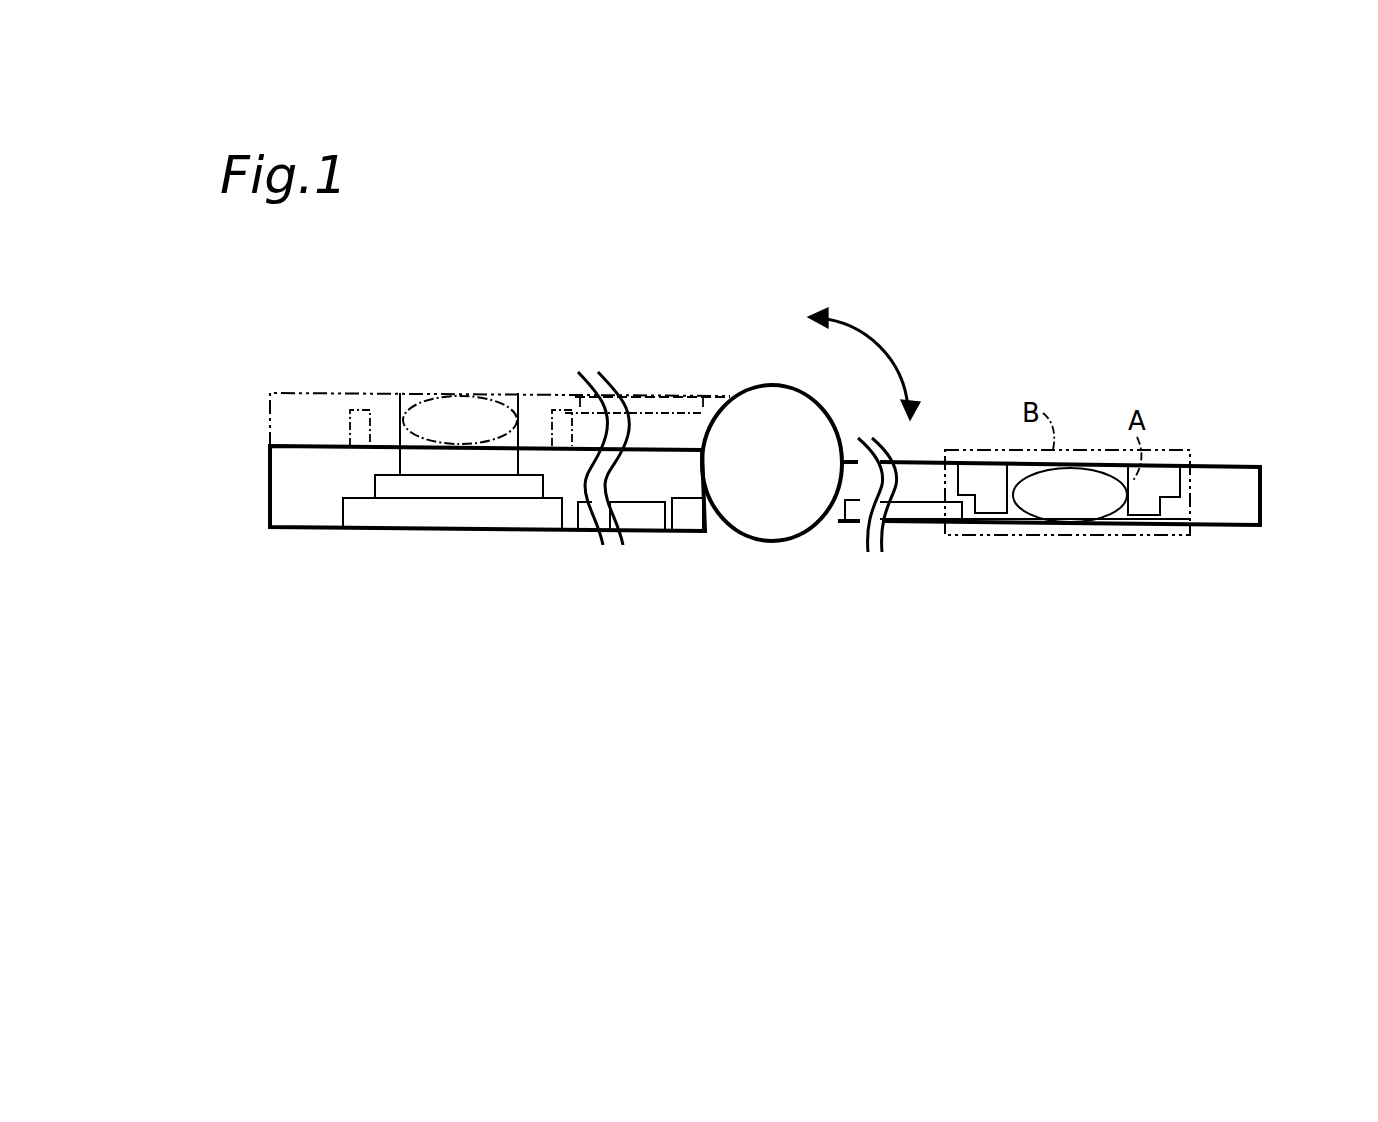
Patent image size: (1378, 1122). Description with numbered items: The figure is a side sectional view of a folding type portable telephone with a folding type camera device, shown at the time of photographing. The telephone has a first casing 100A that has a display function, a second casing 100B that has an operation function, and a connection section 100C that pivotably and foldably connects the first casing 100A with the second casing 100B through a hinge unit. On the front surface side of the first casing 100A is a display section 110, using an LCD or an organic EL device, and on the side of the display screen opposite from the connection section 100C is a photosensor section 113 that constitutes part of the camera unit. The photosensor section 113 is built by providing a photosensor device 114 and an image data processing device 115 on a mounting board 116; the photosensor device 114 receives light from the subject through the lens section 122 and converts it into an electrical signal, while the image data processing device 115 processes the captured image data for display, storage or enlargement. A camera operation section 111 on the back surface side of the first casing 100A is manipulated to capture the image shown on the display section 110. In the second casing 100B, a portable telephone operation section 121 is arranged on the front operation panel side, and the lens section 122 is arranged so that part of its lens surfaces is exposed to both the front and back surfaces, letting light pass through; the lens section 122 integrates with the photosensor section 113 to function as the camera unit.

The first casing 100A is at (258, 494).
The second casing 100B is at (255, 415).
The connection section 100C is at (782, 480).
The display section 110 is at (635, 517).
The camera operation section 111 is at (683, 513).
The photosensor section 113 is at (605, 715).
The photosensor device 114 is at (478, 460).
The image data processing device 115 is at (400, 487).
The mounting board 116 is at (445, 512).
The portable telephone operation section 121 is at (663, 397).
The lens section 122 is at (442, 378).